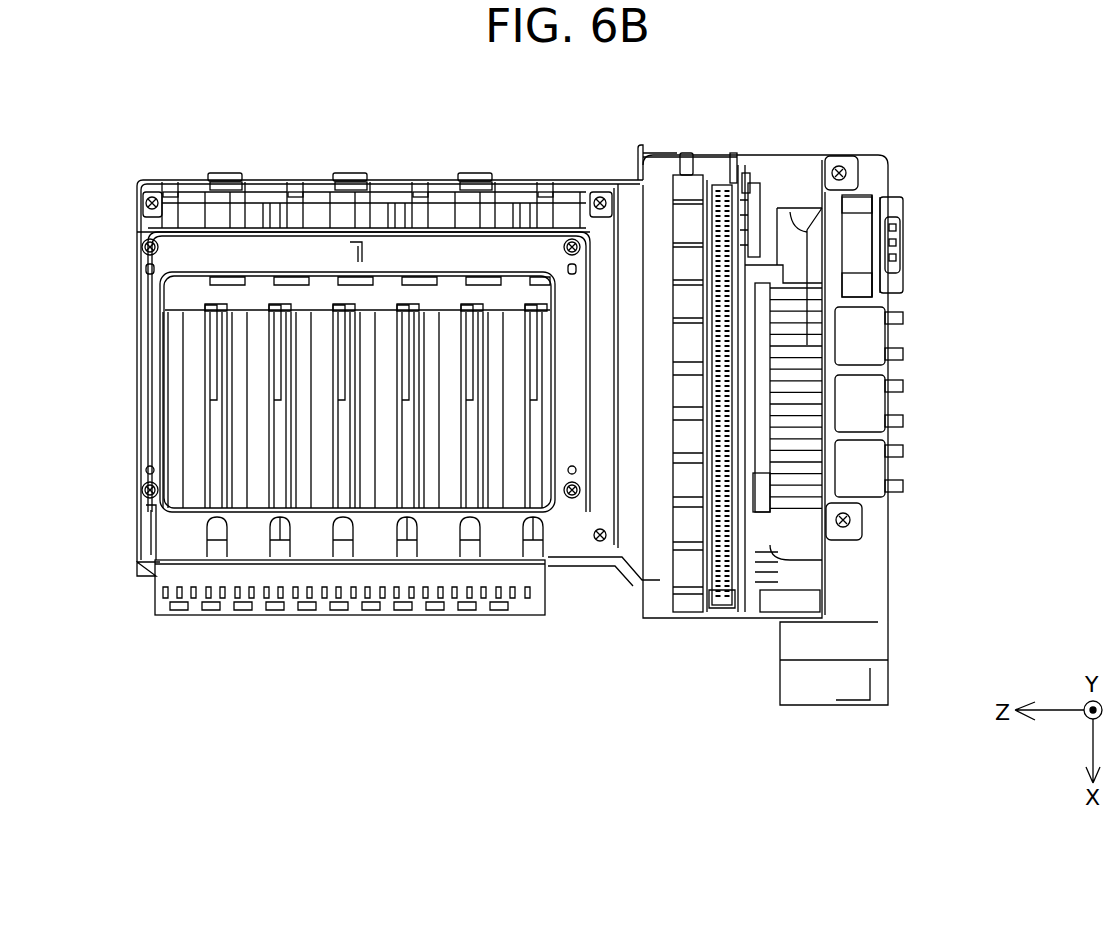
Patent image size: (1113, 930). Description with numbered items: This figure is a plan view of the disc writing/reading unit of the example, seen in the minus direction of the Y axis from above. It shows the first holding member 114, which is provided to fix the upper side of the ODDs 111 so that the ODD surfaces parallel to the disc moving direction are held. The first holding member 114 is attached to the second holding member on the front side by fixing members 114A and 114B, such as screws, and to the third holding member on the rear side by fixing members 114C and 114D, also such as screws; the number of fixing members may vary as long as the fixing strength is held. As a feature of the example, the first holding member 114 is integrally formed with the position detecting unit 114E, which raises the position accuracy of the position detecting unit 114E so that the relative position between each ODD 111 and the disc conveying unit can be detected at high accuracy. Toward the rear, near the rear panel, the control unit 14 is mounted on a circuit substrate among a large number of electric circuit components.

The control unit 14 is at (744, 595).
The ODD 111 is at (195, 218).
The first holding member 114 is at (395, 252).
The fixing member 114A is at (143, 248).
The fixing member 114B is at (143, 490).
The fixing member 114C is at (572, 500).
The fixing member 114D is at (571, 242).
The position detecting unit 114E is at (525, 602).